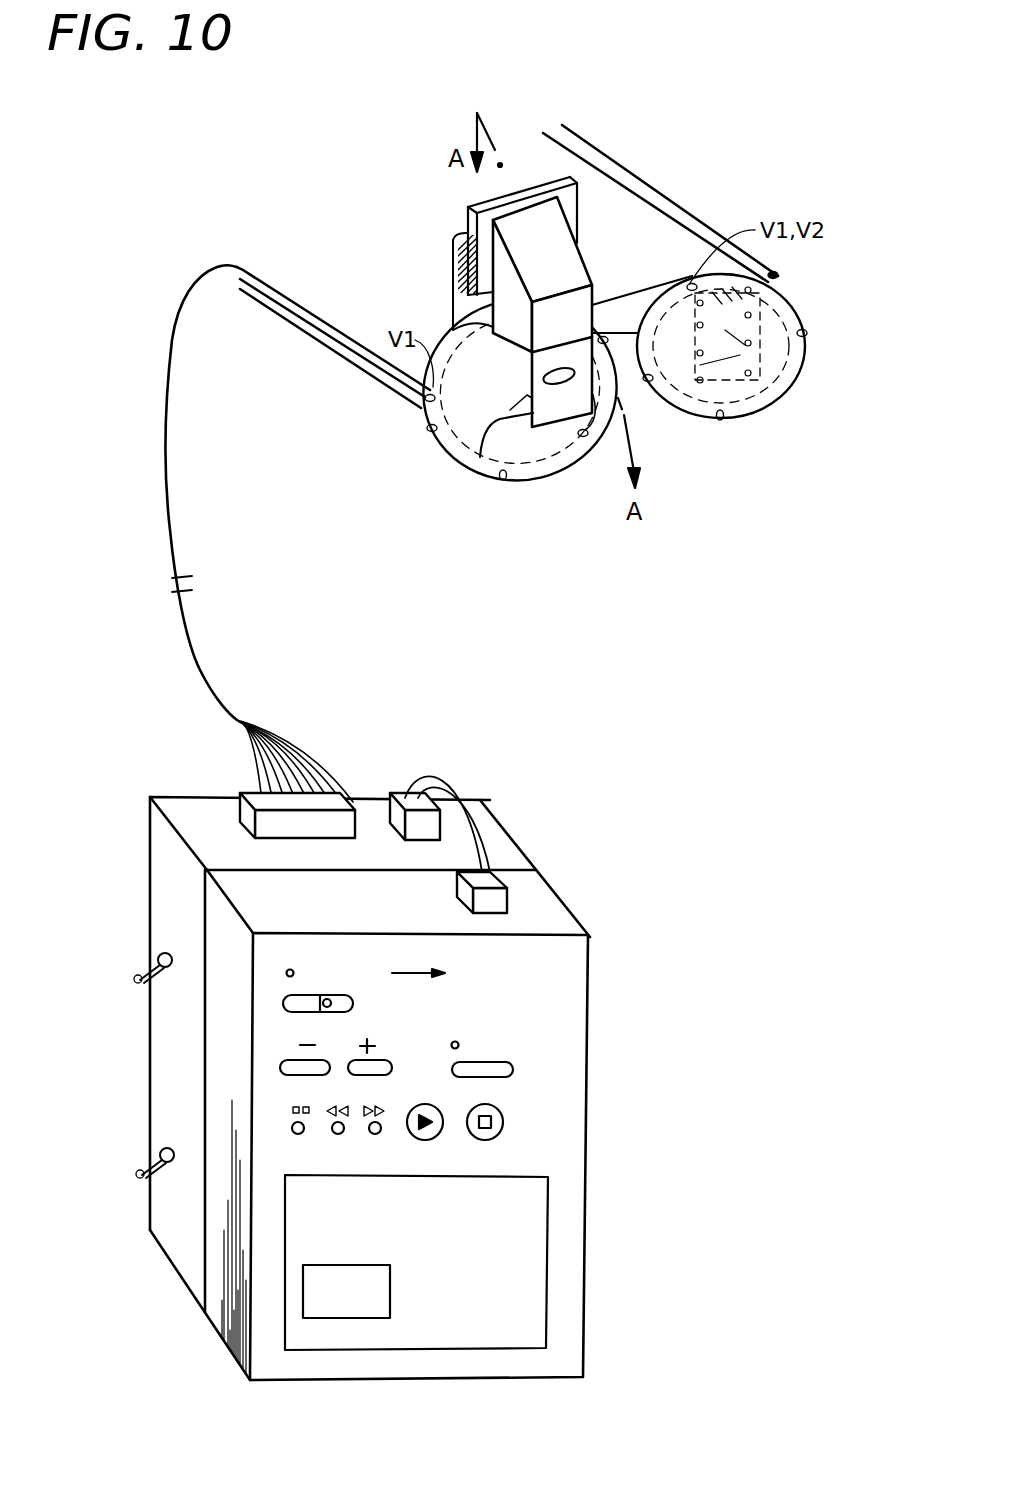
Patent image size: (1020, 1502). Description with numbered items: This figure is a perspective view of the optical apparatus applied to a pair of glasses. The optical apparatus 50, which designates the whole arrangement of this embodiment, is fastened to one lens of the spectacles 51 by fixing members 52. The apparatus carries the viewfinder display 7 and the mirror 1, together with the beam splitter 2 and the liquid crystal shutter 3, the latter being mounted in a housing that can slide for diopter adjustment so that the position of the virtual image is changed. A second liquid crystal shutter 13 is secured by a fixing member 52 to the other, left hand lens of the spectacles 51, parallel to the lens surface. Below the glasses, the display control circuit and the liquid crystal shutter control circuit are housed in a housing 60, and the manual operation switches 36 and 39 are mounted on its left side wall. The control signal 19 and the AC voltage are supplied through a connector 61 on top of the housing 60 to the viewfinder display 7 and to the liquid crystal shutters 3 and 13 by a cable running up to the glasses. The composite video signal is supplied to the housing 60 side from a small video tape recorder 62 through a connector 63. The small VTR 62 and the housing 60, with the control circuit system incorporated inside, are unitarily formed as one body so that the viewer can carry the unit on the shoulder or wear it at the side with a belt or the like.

The mirror 1 is at (568, 258).
The beam splitter 2 is at (485, 440).
The liquid crystal shutter 3 is at (560, 415).
The viewfinder display 7 is at (460, 232).
The liquid crystal shutter 13 is at (732, 352).
The control signal 19 is at (453, 300).
The manual operation switch 36 is at (137, 977).
The manual operation switch 39 is at (138, 1172).
The optical apparatus 50 is at (606, 274).
The spectacles 51 is at (527, 437).
The fixing member 52 is at (775, 388).
The housing 60 is at (157, 885).
The connector 61 is at (347, 828).
The small video tape recorder 62 is at (568, 1063).
The connector 63 is at (507, 843).